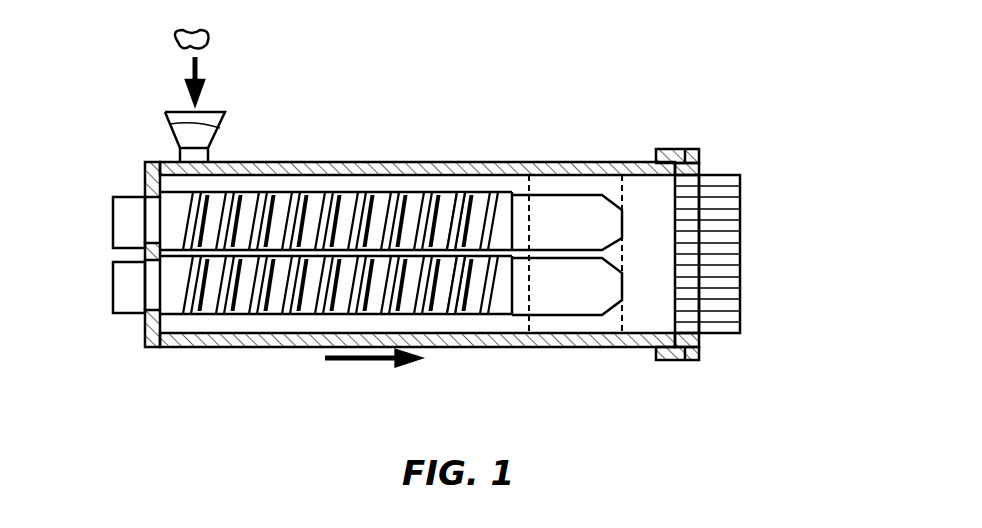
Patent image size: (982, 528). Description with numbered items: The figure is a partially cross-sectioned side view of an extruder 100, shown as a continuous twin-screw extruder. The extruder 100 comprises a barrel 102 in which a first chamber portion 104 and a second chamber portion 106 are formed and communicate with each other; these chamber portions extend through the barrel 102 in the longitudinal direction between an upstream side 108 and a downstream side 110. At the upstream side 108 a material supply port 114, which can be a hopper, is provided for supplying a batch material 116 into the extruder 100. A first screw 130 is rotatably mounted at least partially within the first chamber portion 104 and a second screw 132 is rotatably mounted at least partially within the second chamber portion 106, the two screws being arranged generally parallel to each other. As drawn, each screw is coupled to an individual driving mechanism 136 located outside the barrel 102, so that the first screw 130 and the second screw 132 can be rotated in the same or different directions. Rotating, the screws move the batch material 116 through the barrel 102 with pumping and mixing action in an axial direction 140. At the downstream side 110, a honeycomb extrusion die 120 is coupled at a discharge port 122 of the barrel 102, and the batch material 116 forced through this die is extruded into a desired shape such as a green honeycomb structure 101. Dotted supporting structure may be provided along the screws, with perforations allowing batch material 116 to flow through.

The extruder 100 is at (446, 229).
The green honeycomb structure 101 is at (742, 255).
The barrel 102 is at (225, 162).
The first chamber portion 104 is at (391, 188).
The second chamber portion 106 is at (391, 328).
The upstream side 108 is at (160, 357).
The downstream side 110 is at (672, 365).
The material supply port 114 is at (178, 138).
The batch material 116 is at (210, 44).
The honeycomb extrusion die 120 is at (703, 190).
The discharge port 122 is at (656, 195).
The first screw 130 is at (470, 188).
The second screw 132 is at (450, 322).
The driving mechanisms 136 is at (135, 197).
The axial direction 140 is at (360, 362).